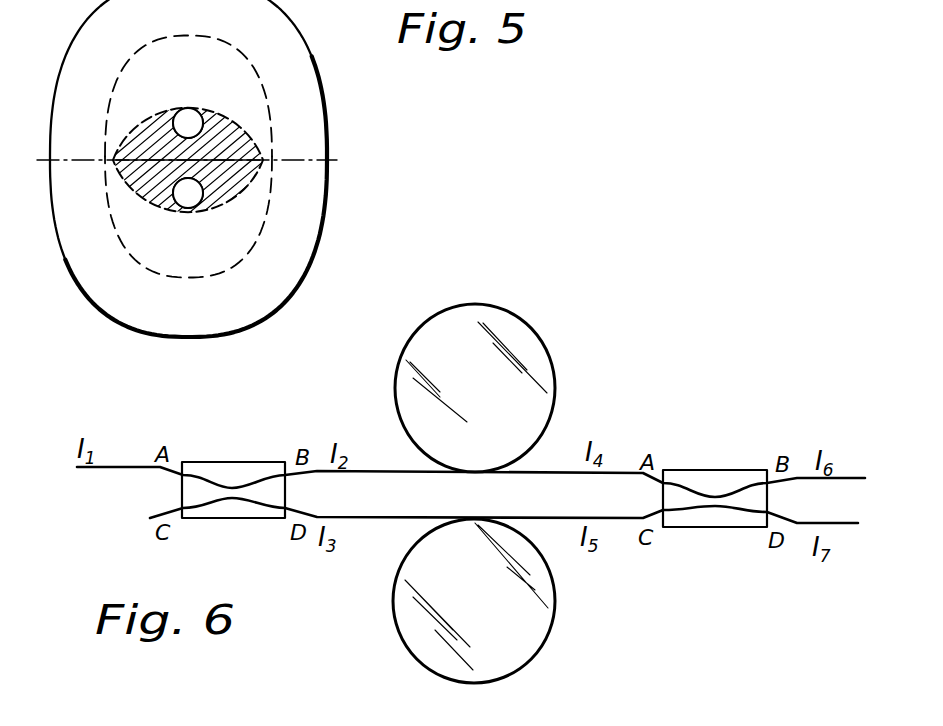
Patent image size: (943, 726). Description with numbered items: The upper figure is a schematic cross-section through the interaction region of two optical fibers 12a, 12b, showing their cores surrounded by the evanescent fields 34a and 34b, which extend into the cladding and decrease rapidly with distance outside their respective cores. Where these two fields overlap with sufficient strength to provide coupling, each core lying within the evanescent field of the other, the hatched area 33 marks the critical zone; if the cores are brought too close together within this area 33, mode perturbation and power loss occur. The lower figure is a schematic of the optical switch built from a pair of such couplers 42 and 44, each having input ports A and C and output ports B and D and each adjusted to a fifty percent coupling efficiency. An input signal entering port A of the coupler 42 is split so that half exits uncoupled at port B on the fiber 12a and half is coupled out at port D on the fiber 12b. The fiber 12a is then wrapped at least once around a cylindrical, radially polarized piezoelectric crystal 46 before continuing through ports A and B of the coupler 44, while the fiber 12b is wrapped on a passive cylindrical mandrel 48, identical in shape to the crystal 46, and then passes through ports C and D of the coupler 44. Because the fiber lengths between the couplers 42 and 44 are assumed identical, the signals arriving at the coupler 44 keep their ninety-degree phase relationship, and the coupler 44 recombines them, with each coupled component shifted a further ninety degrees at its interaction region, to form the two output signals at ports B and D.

In FIG. 5, the fiber 12a is at (327, 89).
In FIG. 6, the fiber 12a is at (389, 470).
In FIG. 5, the fiber 12b is at (325, 233).
In FIG. 6, the fiber 12b is at (389, 519).
In FIG. 5, the critical zone area 33 is at (263, 158).
In FIG. 5, the evanescent field 34a is at (249, 68).
In FIG. 5, the evanescent field 34b is at (186, 278).
In FIG. 6, the optical fiber coupler 42 is at (237, 462).
In FIG. 6, the optical fiber coupler 44 is at (727, 476).
In FIG. 6, the piezoelectric crystal 46 is at (525, 346).
In FIG. 6, the passive cylindrical mandrel 48 is at (535, 627).